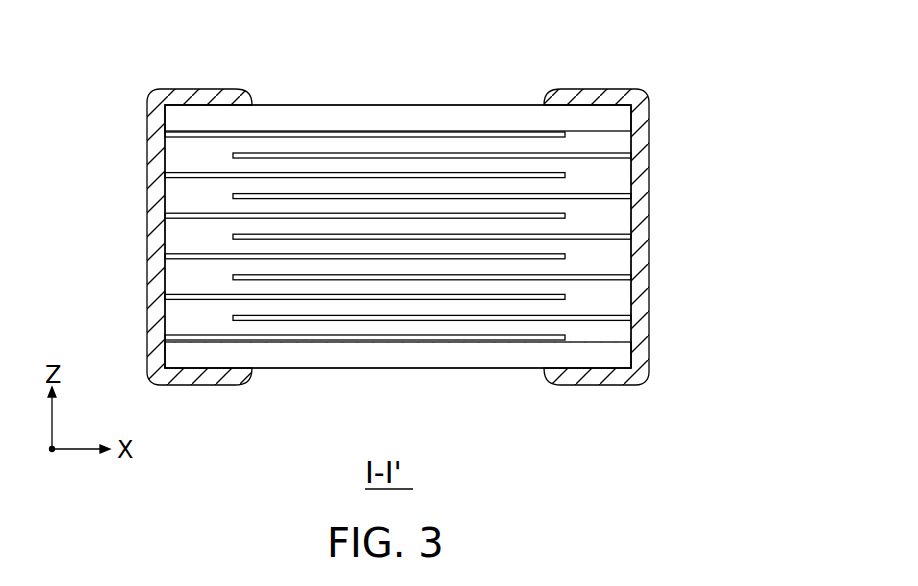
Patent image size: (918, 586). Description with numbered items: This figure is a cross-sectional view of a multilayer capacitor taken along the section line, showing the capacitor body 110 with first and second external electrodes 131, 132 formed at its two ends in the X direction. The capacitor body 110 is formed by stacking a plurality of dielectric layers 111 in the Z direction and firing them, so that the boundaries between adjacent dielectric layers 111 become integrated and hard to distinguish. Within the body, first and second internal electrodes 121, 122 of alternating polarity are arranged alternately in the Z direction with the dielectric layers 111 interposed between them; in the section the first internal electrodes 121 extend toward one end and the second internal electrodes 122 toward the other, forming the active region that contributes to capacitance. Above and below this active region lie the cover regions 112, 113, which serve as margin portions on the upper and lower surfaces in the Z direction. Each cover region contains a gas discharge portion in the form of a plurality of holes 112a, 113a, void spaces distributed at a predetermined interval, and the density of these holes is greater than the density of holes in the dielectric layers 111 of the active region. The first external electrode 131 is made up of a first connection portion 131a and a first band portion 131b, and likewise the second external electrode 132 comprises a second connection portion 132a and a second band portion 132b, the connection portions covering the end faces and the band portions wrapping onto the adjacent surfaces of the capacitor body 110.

The capacitor body 110 is at (352, 222).
The dielectric layer 111 is at (182, 198).
The cover region 112 is at (398, 85).
The holes 112a is at (290, 106).
The cover region 113 is at (398, 389).
The holes 113a is at (465, 360).
The first internal electrode 121 is at (322, 106).
The second internal electrode 122 is at (500, 152).
The first external electrode 131 is at (128, 227).
The first connection portion 131a is at (148, 168).
The first band portion 131b is at (204, 88).
The second external electrode 132 is at (674, 228).
The second connection portion 132a is at (648, 168).
The second band portion 132b is at (594, 88).